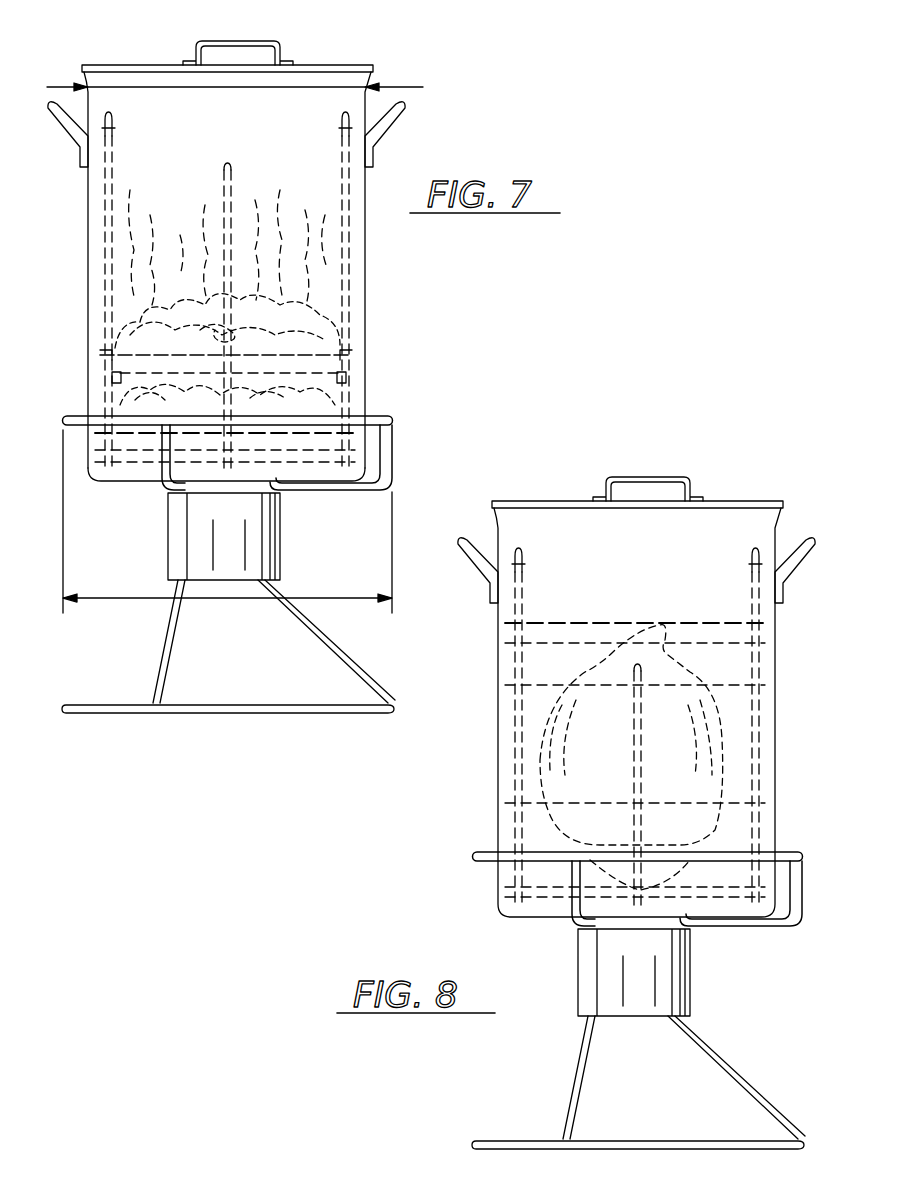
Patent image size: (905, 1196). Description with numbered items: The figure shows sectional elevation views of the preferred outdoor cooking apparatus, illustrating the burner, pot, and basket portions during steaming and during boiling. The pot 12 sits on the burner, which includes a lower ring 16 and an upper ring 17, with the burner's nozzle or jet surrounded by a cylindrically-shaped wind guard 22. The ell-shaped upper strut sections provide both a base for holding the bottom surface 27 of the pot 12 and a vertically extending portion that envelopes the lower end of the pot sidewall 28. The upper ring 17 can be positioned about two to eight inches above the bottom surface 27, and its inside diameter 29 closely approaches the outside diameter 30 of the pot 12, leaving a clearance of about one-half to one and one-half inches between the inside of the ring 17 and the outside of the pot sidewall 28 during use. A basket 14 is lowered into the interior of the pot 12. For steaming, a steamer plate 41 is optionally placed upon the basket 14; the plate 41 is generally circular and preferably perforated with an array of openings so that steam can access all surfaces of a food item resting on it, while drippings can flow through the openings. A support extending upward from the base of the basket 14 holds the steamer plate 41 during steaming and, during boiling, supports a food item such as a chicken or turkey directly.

In FIG. 7, the pot 12 is at (367, 178).
In FIG. 7, the basket 14 is at (110, 162).
In FIG. 8, the basket 14 is at (523, 567).
In FIG. 7, the lower ring 16 is at (58, 717).
In FIG. 8, the lower ring 16 is at (468, 1140).
In FIG. 7, the upper ring 17 is at (383, 417).
In FIG. 8, the upper ring 17 is at (481, 851).
In FIG. 7, the wind guard 22 is at (263, 532).
In FIG. 8, the wind guard 22 is at (590, 990).
In FIG. 7, the bottom surface 27 is at (118, 493).
In FIG. 7, the pot sidewall 28 is at (225, 303).
In FIG. 8, the pot sidewall 28 is at (777, 719).
In FIG. 7, the inside diameter 29 is at (226, 603).
In FIG. 7, the outside diameter 30 is at (57, 80).
In FIG. 7, the steamer plate 41 is at (108, 376).